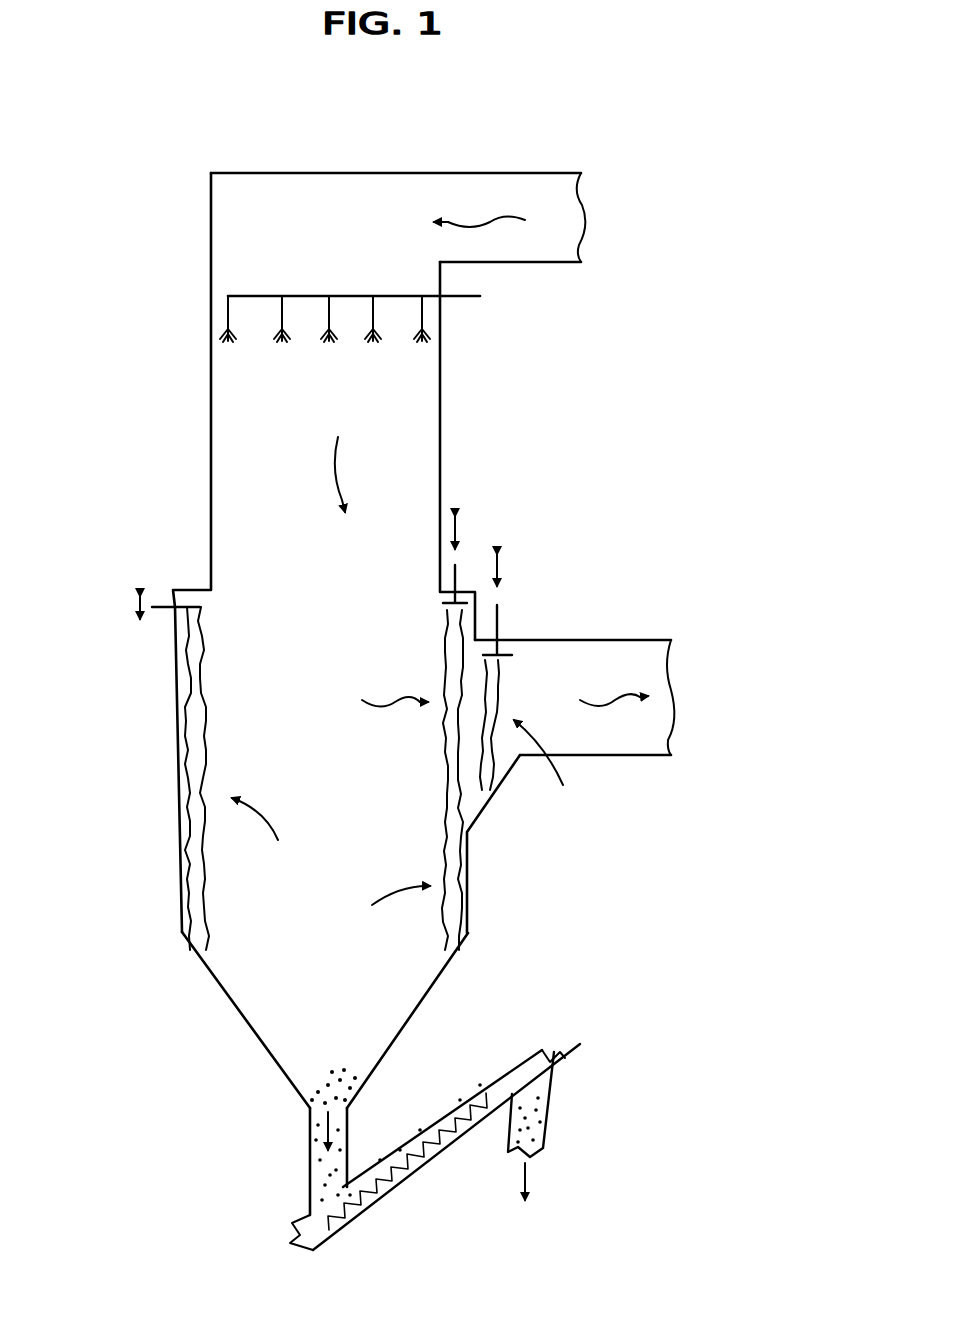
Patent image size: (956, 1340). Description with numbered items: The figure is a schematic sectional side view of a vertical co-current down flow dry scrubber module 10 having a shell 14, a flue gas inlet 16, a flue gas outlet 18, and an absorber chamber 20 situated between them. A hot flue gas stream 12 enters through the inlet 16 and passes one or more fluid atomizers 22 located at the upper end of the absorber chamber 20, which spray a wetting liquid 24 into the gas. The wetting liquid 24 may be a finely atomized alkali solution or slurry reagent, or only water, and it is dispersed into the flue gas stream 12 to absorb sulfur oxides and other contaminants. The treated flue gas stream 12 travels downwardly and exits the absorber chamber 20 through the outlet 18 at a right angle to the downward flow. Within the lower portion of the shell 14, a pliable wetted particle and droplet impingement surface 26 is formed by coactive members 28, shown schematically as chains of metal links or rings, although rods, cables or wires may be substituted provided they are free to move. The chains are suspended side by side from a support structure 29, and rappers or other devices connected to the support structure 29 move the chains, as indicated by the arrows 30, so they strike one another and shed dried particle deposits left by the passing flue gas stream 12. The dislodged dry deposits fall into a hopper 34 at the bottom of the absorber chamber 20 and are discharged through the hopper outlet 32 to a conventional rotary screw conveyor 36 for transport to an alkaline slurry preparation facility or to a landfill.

The dry scrubber module 10 is at (406, 553).
The flue gas stream 12 is at (486, 460).
The shell 14 is at (208, 453).
The flue gas inlet 16 is at (523, 270).
The flue gas outlet 18 is at (605, 630).
The absorber chamber 20 is at (352, 791).
The fluid atomizers 22 is at (348, 292).
The wetting liquid 24 is at (318, 350).
The pliable wetted particle and droplet impingement surface 26 is at (405, 833).
The coactive members 28 is at (205, 698).
The support structure 29 is at (165, 614).
The direction of movement 30 is at (125, 607).
The hopper outlet 32 is at (302, 1162).
The hopper 34 is at (352, 1024).
The rotary screw conveyor 36 is at (450, 1160).